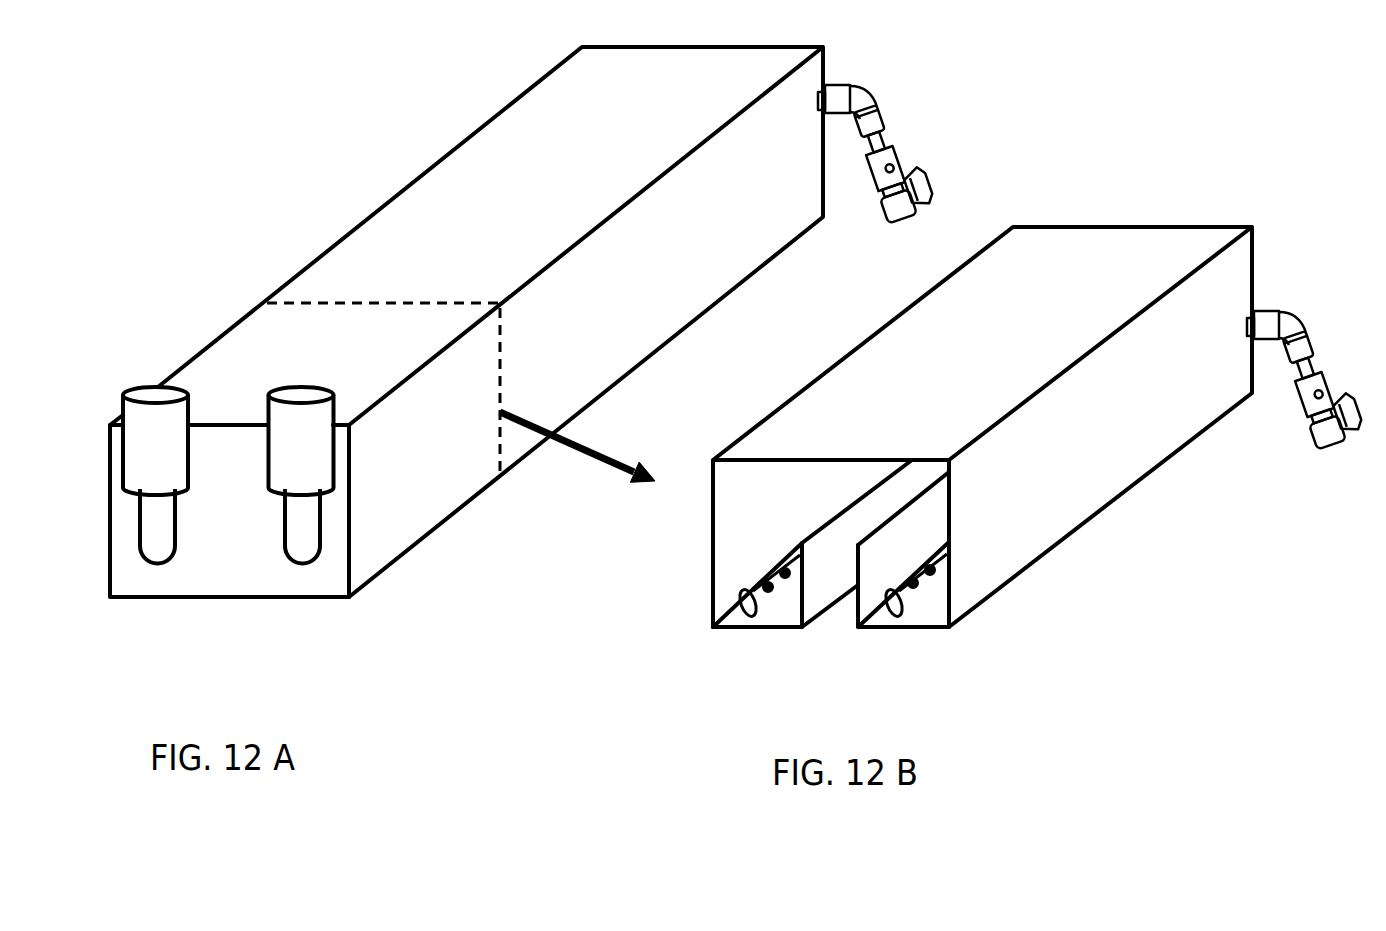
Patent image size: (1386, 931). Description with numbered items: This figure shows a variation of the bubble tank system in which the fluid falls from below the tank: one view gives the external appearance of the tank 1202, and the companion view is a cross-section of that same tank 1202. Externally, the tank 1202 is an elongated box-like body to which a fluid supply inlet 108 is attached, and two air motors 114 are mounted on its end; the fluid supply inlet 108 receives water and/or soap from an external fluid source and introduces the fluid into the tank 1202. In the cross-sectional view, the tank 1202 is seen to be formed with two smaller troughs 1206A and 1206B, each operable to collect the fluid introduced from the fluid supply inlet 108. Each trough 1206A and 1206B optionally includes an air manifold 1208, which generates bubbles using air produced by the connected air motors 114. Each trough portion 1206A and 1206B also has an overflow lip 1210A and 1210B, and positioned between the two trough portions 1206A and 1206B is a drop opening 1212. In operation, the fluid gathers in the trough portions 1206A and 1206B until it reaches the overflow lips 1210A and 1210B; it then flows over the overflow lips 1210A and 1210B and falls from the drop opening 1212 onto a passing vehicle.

In FIG. 12A, the fluid supply inlet 108 is at (882, 135).
In FIG. 12B, the fluid supply inlet 108 is at (1312, 430).
In FIG. 12A, the air motors 114 is at (297, 553).
In FIG. 12A, the tank 1202 is at (337, 252).
In FIG. 12B, the tank 1202 is at (1123, 260).
In FIG. 12B, the trough 1206A is at (752, 545).
In FIG. 12B, the trough 1206B is at (913, 540).
In FIG. 12B, the air manifold 1208 is at (747, 612).
In FIG. 12B, the overflow lip 1210A is at (818, 527).
In FIG. 12B, the overflow lip 1210B is at (898, 505).
In FIG. 12B, the drop opening 1212 is at (840, 568).